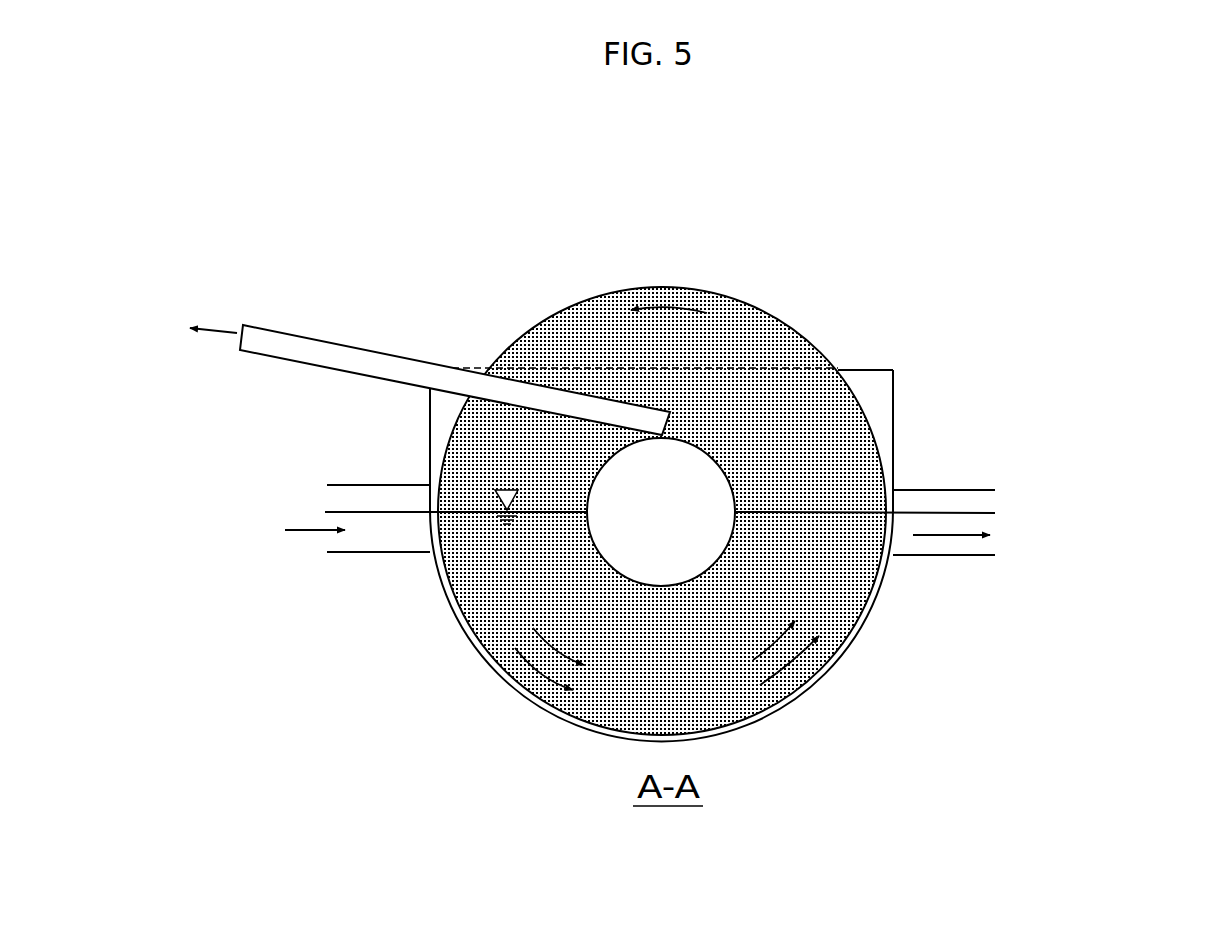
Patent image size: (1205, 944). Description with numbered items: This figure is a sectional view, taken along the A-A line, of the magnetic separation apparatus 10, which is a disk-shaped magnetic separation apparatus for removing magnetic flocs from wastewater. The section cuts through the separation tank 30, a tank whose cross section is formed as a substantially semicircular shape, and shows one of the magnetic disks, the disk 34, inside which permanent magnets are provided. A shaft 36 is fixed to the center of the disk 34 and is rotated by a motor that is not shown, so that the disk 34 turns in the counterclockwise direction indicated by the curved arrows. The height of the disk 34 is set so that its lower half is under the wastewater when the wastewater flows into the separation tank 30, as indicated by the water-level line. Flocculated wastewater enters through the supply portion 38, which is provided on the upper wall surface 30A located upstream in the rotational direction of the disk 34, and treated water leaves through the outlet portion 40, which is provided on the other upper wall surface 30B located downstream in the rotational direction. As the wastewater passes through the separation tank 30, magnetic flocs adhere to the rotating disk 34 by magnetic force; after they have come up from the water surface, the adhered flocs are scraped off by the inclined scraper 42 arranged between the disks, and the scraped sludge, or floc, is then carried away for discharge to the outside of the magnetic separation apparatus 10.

The magnetic separation apparatus 10 is at (840, 279).
The separation tank 30 is at (919, 371).
The wall surface 30A is at (430, 410).
The wall surface 30B is at (895, 412).
The disk 34 is at (663, 287).
The shaft 36 is at (630, 560).
The supply portion 38 is at (373, 552).
The outlet portion 40 is at (933, 555).
The scraper 42 is at (347, 357).